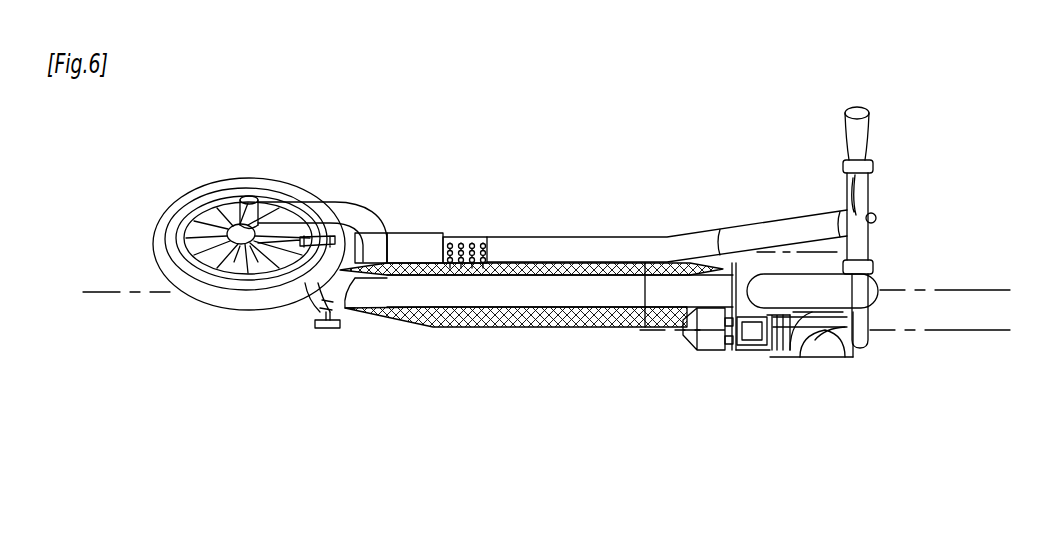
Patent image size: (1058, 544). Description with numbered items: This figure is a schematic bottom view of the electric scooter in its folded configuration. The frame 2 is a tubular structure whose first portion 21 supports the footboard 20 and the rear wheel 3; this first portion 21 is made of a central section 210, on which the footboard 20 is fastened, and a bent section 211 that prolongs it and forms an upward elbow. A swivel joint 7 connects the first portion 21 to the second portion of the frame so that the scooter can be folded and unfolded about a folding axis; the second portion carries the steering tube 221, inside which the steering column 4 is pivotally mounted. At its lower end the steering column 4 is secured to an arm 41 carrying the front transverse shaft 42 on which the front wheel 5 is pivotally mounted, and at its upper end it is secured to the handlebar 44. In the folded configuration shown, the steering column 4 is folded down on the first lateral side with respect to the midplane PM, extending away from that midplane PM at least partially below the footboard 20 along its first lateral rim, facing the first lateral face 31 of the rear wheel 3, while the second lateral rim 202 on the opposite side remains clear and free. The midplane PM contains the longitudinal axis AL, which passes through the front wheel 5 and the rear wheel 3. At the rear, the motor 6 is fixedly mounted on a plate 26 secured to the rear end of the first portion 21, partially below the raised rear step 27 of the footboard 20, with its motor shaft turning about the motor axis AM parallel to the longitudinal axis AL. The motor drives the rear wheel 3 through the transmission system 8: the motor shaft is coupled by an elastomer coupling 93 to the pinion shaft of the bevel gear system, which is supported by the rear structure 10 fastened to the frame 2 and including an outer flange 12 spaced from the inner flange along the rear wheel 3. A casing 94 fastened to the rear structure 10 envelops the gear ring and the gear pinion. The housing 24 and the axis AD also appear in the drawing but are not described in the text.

The frame 2 is at (521, 296).
The rear wheel 3 is at (771, 266).
The steering column 4 is at (621, 228).
The front wheel 5 is at (146, 206).
The motor 6 is at (701, 330).
The swivel joint 7 is at (306, 314).
The transmission system 8 is at (835, 370).
The rear structure 10 is at (765, 355).
The outer flange 12 is at (780, 352).
The footboard 20 is at (450, 320).
The first portion 21 is at (411, 305).
The front housing 24 is at (357, 245).
The plate 26 is at (723, 265).
The rear step 27 is at (690, 262).
The first lateral face 31 is at (790, 266).
The arm 41 is at (287, 205).
The front transverse shaft 42 is at (250, 198).
The handlebar 44 is at (857, 193).
The elastomer coupling 93 is at (749, 346).
The casing 94 is at (845, 332).
The second lateral rim 202 is at (482, 322).
The central section 210 is at (572, 292).
The bent section 211 is at (357, 298).
The steering tube 221 is at (410, 248).
The rear axis AD is at (826, 250).
The longitudinal axis AL is at (110, 294).
The motor axis AM is at (658, 335).
The midplane PM is at (95, 248).